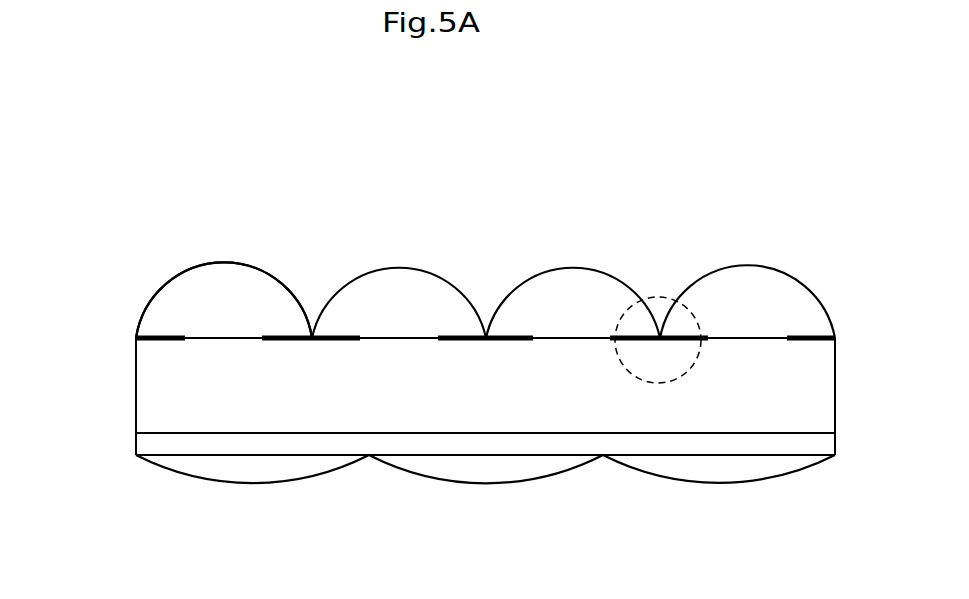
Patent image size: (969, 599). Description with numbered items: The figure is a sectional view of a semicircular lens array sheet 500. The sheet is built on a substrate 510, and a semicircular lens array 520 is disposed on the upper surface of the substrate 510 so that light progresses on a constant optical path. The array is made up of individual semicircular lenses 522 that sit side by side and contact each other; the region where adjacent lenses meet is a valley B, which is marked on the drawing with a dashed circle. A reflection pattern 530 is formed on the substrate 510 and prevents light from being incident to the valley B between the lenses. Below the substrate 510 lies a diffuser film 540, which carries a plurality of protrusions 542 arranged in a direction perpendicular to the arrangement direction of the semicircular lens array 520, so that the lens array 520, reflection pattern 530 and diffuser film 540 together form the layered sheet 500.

The semicircular lens array sheet 500 is at (602, 181).
The substrate 510 is at (152, 395).
The semicircular lens array 520 is at (813, 287).
The semicircular lenses 522 is at (253, 285).
The reflection pattern 530 is at (455, 330).
The diffuser film 540 is at (150, 447).
The protrusions 542 is at (268, 470).
The valley B is at (670, 297).